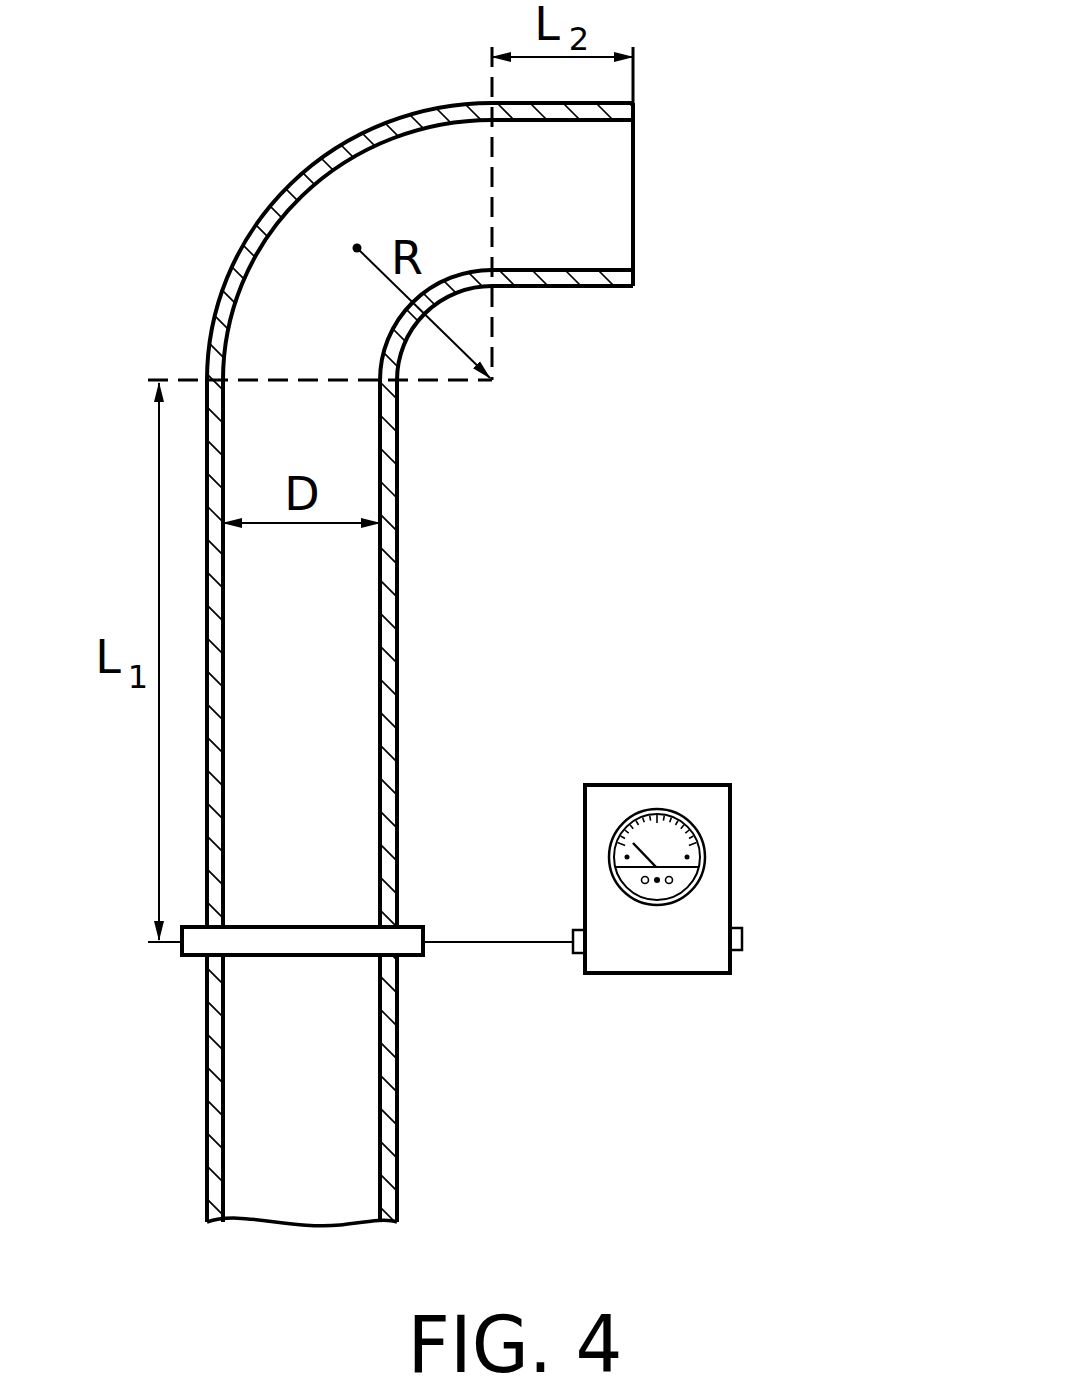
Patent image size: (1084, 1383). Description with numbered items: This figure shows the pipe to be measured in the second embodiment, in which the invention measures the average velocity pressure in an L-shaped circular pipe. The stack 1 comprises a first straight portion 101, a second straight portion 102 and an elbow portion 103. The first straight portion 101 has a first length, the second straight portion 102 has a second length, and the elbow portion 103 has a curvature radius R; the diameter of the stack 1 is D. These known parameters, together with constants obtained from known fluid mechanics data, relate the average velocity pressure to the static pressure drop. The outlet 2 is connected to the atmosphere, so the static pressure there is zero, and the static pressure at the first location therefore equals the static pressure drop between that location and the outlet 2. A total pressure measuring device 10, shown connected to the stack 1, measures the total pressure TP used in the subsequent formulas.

The stack 1 is at (397, 1127).
The outlet 2 is at (634, 197).
The total pressure measuring device 10 is at (734, 855).
The first straight portion 101 is at (397, 638).
The second straight portion 102 is at (562, 283).
The elbow portion 103 is at (308, 168).